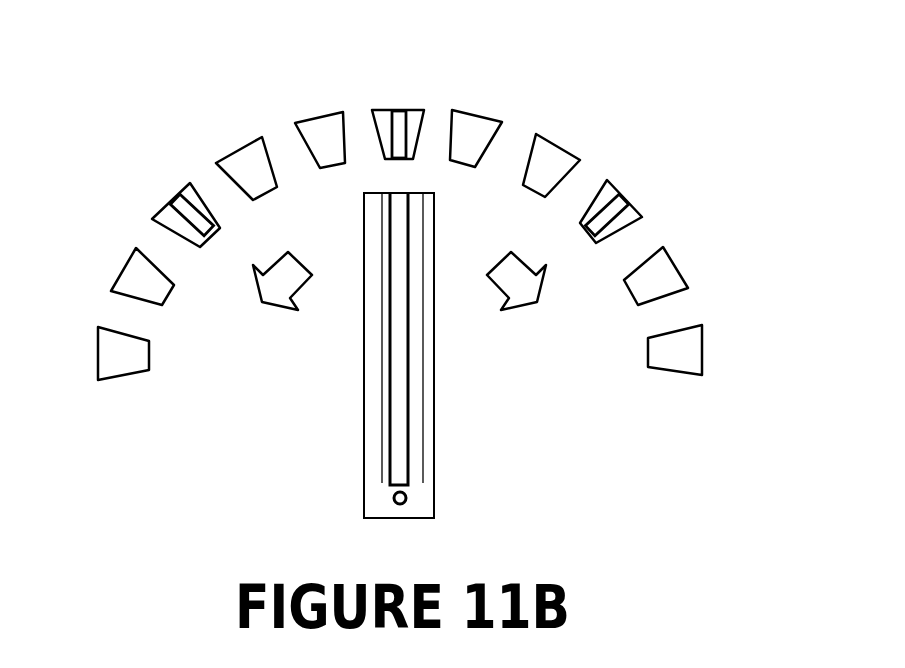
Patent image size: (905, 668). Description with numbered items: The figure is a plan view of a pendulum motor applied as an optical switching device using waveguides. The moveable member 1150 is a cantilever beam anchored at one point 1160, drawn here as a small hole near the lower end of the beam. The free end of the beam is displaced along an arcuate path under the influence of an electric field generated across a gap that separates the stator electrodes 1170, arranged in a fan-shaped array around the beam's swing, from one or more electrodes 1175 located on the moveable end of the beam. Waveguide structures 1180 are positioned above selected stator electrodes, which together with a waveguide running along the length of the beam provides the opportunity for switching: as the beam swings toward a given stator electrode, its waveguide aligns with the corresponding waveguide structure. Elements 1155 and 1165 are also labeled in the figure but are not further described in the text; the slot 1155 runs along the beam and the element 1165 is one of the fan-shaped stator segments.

The moveable member 1150 is at (365, 400).
The slot 1155 is at (397, 365).
The anchor point 1160 is at (410, 502).
The trapezoidal segment 1165 is at (433, 168).
The stator electrodes 1170 is at (107, 263).
The electrodes on the moveable end of the beam 1175 is at (373, 192).
The waveguide structures 1180 is at (712, 15).